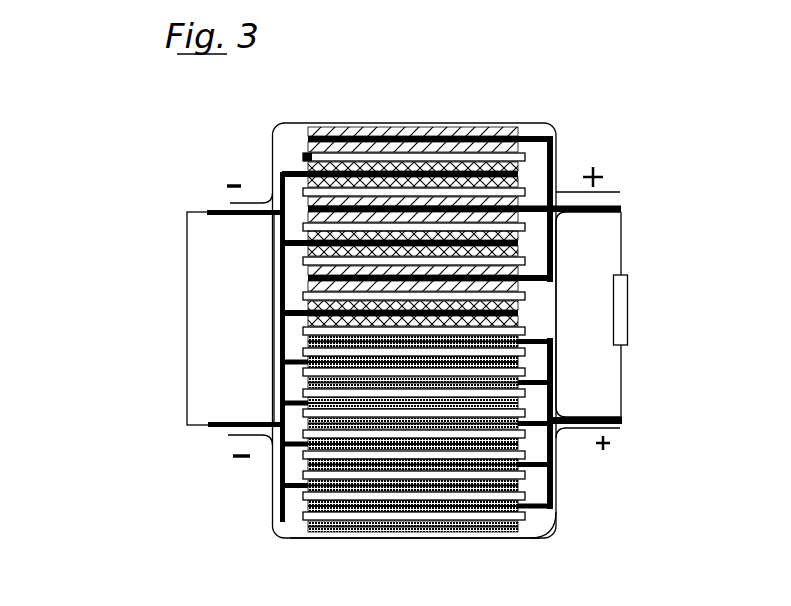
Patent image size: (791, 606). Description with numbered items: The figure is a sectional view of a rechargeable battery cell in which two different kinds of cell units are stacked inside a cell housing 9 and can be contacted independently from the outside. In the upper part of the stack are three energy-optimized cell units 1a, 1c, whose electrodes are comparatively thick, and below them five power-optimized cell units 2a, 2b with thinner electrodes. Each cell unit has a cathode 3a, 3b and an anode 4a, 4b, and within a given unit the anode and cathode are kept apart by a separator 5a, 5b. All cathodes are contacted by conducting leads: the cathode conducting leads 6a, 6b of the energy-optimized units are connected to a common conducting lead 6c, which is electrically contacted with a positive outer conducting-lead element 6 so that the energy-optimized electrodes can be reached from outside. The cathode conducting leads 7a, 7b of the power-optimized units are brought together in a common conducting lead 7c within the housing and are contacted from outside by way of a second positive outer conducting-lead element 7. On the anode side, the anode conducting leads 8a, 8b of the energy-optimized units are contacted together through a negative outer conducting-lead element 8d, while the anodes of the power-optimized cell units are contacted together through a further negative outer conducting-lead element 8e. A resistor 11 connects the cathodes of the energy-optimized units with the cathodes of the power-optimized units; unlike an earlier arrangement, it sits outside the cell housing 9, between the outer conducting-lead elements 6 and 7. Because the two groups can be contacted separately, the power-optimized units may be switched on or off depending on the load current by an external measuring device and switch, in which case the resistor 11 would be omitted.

The energy-optimized cell unit 1a is at (303, 157).
The energy-optimized cell unit 1c is at (303, 260).
The power-optimized cell unit 2a is at (303, 373).
The power-optimized cell unit 2b is at (303, 483).
The cathode 3a is at (556, 138).
The cathode 3b is at (552, 492).
The anode 4a is at (556, 157).
The anode 4b is at (553, 443).
The separator 5a is at (510, 128).
The separator 5b is at (453, 513).
The outer conducting-lead element 6 is at (622, 202).
The cathode conducting lead 6a is at (373, 133).
The cathode conducting lead 6b is at (283, 178).
The common conducting lead 6c is at (620, 192).
The outer conducting-lead element 7 is at (620, 413).
The cathode conducting lead 7a is at (323, 515).
The cathode conducting lead 7b is at (303, 423).
The common conducting lead 7c is at (553, 480).
The anode conducting lead 8a is at (293, 168).
The anode conducting lead 8b is at (372, 538).
The outer conducting-lead element 8d is at (220, 208).
The outer conducting-lead element 8e is at (217, 425).
The cell housing 9 is at (545, 535).
The resistor 11 is at (620, 305).